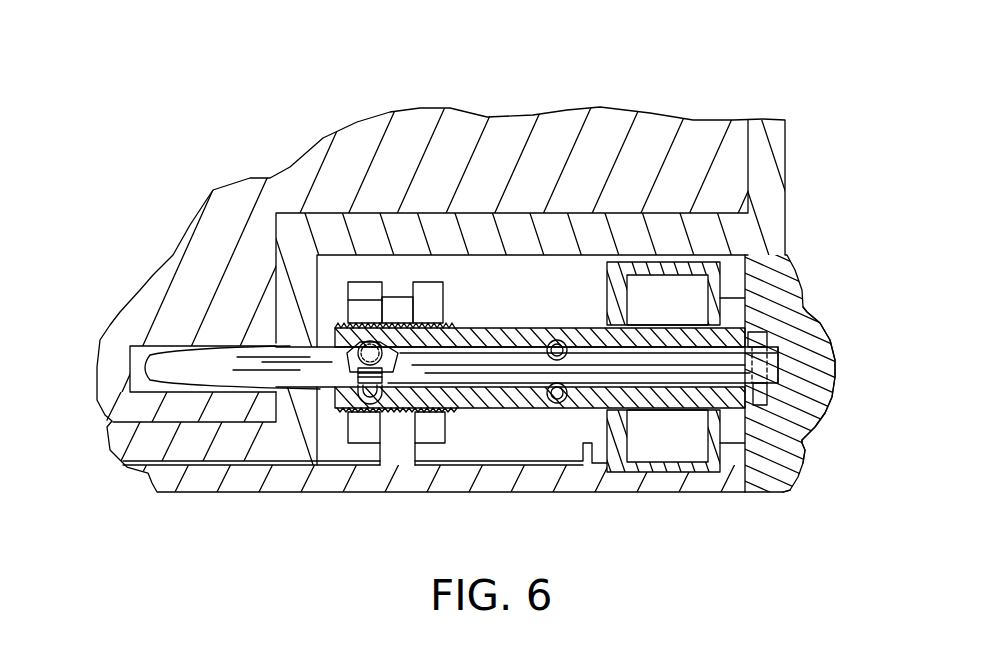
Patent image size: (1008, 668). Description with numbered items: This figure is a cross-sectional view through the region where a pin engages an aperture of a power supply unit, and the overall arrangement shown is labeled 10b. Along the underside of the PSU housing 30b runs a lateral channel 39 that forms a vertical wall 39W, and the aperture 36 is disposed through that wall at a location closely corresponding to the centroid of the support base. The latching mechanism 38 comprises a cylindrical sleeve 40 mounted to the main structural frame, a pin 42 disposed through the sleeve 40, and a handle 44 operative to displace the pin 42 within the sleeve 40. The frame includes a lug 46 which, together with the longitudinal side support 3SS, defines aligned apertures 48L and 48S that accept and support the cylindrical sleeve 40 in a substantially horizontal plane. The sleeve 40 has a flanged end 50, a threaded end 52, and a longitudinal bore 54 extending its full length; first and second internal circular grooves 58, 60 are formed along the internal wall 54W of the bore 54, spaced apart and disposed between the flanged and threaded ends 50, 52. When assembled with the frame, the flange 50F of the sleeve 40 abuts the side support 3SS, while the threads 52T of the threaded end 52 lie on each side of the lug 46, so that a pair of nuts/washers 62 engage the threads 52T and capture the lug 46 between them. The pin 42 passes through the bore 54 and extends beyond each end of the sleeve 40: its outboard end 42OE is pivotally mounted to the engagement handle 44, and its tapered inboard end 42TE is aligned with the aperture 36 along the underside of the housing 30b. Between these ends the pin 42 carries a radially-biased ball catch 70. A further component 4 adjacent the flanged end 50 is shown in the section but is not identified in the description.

The connector assembly 10b is at (771, 141).
The PSU housing 30b is at (770, 174).
The aperture 36 is at (243, 345).
The latching mechanism 38 is at (570, 57).
The lateral channel 39 is at (592, 287).
The vertical wall 39W is at (318, 282).
The cylindrical sleeve 40 is at (477, 333).
The pin 42 is at (500, 367).
The tapered inboard end 42TE is at (172, 356).
The outboard end 42OE is at (760, 365).
The handle 44 is at (757, 285).
The lug 46 is at (423, 310).
The aperture 48L is at (378, 415).
The aperture 48S is at (692, 400).
The flanged end 50 is at (742, 329).
The flange 50F is at (802, 447).
The threaded end 52 is at (340, 406).
The clamp teeth 52T is at (343, 326).
The longitudinal bore 54 is at (638, 410).
The internal wall 54W is at (448, 412).
The first internal circular groove 58 is at (353, 400).
The second internal circular groove 60 is at (550, 398).
The nuts/washers 62 is at (360, 303).
The radially-biased ball catch 70 is at (358, 366).
The ball 4 is at (812, 391).
The side support 3SS is at (778, 470).